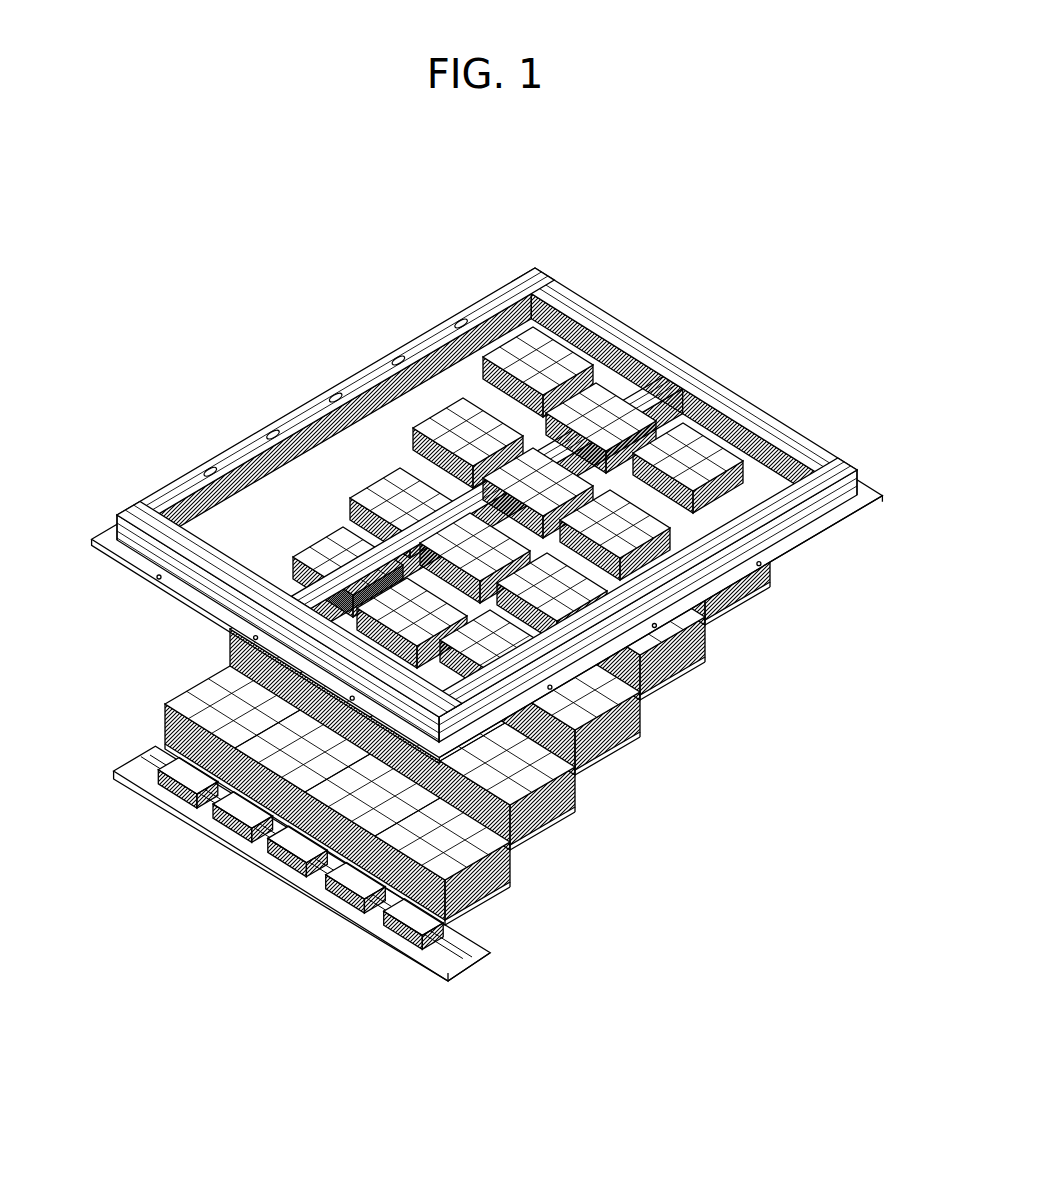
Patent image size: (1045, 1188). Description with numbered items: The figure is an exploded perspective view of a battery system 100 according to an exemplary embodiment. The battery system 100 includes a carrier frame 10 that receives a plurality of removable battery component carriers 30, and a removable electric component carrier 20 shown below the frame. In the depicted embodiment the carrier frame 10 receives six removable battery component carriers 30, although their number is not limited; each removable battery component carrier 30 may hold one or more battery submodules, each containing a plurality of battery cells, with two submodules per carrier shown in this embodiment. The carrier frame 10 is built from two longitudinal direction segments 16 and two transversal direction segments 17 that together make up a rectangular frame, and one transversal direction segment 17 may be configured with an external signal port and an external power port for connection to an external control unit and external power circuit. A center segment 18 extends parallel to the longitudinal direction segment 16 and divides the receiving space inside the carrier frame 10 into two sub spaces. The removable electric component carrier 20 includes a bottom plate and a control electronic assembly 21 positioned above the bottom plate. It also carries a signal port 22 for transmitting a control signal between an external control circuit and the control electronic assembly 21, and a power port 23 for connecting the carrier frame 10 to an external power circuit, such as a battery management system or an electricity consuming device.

The battery system 100 is at (289, 313).
The carrier frame 10 is at (487, 482).
The longitudinal direction segment 16 is at (237, 433).
The transversal direction segment 17 is at (790, 410).
The center segment 18 is at (656, 378).
The removable electric component carrier 20 is at (324, 882).
The control electronic assembly 21 is at (367, 910).
The signal port 22 is at (467, 929).
The power port 23 is at (289, 881).
The removable battery component carrier 30 is at (626, 776).